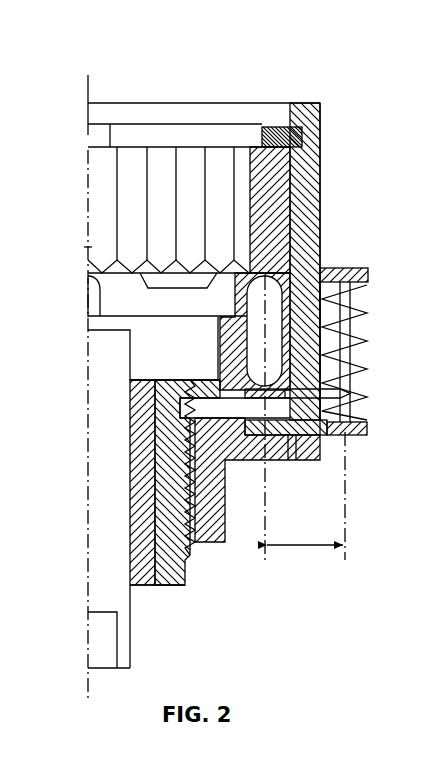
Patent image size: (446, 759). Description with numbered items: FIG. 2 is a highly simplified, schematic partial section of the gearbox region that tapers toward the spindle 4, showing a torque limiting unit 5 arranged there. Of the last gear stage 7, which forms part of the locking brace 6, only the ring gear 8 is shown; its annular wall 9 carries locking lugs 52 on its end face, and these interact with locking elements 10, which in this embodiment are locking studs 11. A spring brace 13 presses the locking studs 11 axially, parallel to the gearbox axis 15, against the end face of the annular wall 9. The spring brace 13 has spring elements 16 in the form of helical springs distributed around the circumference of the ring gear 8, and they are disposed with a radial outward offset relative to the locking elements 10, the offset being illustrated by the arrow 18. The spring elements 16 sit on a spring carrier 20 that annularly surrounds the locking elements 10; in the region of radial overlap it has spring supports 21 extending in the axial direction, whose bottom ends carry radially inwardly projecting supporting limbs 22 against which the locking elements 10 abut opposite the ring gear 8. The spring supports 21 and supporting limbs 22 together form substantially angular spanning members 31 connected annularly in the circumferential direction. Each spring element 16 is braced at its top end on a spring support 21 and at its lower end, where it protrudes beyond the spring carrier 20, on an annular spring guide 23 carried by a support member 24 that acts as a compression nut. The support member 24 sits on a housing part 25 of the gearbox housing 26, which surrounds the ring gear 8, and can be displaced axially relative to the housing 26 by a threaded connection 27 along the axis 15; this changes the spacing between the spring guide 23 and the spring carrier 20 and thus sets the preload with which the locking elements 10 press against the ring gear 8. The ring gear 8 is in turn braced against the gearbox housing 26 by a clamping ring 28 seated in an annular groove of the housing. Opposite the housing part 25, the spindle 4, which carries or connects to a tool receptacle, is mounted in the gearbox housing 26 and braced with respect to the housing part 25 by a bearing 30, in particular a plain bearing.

The spindle 4 is at (115, 592).
The torque limiting unit 5 is at (249, 238).
The locking brace 6 is at (380, 273).
The last gear stage 7 is at (218, 126).
The ring gear 8 is at (290, 170).
The annular wall 9 is at (272, 197).
The locking elements 10 is at (110, 290).
The locking studs 11 is at (222, 308).
The spring brace 13 is at (378, 415).
The gearbox axis 15 is at (90, 91).
The spring elements 16 is at (368, 314).
The arrow 18 is at (300, 550).
The spring carrier 20 is at (372, 356).
The spring supports 21 is at (350, 268).
The supporting limbs 22 is at (255, 397).
The annular spring guide 23 is at (303, 438).
The support member 24 is at (215, 545).
The housing part 25 is at (170, 587).
The gearbox housing 26 is at (308, 138).
The threaded connection 27 is at (188, 524).
The clamping ring 28 is at (283, 128).
The bearing 30 is at (145, 472).
The spanning members 31 is at (235, 408).
The locking lugs 52 is at (170, 275).